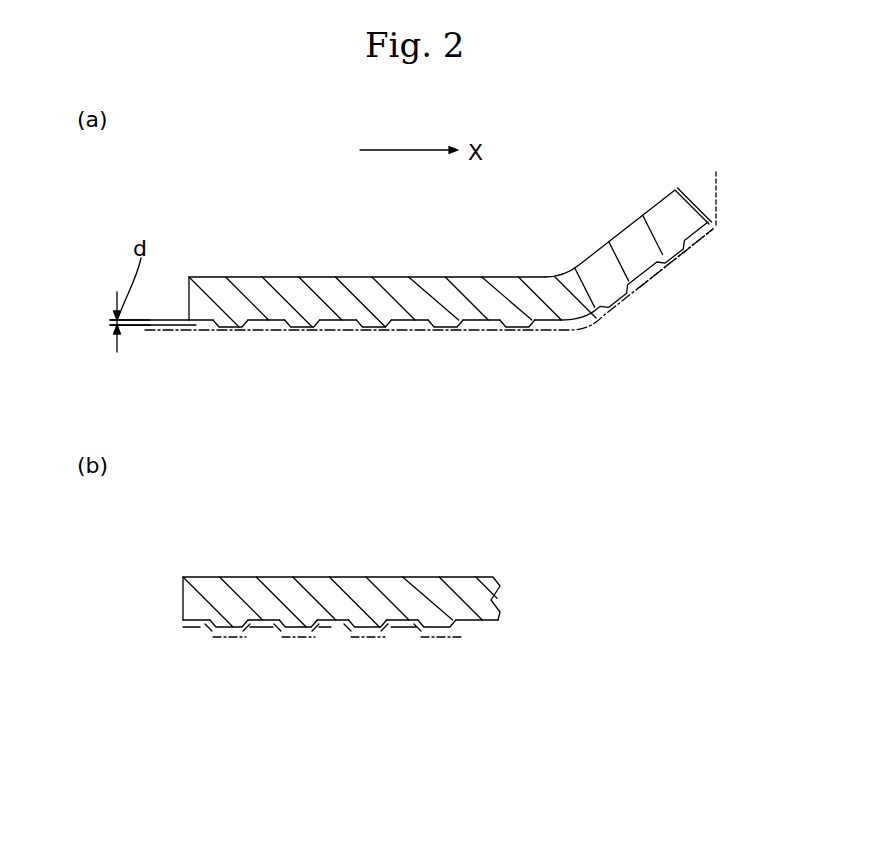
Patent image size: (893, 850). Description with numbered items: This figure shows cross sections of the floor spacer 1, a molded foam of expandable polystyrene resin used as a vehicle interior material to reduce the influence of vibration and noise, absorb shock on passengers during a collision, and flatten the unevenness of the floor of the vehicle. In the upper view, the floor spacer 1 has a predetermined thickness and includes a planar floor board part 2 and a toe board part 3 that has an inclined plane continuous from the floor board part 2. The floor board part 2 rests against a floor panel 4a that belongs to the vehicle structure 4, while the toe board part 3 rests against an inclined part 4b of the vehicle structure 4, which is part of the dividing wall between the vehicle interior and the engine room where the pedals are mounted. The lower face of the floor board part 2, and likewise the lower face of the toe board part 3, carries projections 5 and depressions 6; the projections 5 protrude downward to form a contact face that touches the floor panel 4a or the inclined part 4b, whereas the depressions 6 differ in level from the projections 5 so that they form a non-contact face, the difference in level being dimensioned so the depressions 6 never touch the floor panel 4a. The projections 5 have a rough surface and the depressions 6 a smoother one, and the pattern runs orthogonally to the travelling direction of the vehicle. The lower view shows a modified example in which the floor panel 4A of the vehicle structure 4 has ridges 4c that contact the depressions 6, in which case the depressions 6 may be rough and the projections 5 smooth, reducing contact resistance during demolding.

The floor spacer 1 is at (275, 137).
The floor board part 2 is at (400, 282).
The toe board part 3 is at (643, 222).
The vehicle structure 4 is at (497, 346).
The floor panel 4a is at (184, 328).
The inclined part 4b is at (658, 283).
The floor panel 4A is at (468, 658).
The ridges 4c is at (200, 631).
The projections 5 is at (233, 320).
The depressions 6 is at (267, 320).